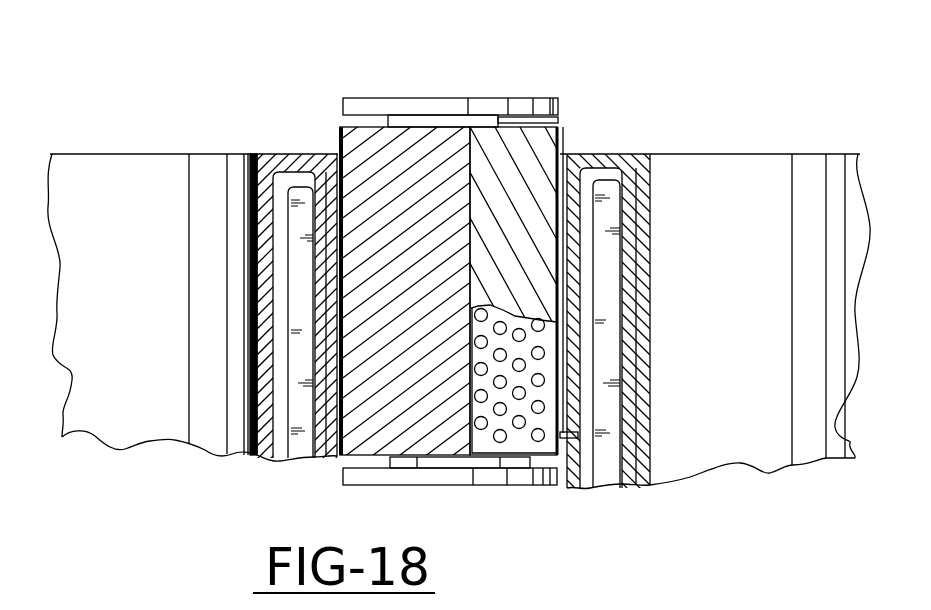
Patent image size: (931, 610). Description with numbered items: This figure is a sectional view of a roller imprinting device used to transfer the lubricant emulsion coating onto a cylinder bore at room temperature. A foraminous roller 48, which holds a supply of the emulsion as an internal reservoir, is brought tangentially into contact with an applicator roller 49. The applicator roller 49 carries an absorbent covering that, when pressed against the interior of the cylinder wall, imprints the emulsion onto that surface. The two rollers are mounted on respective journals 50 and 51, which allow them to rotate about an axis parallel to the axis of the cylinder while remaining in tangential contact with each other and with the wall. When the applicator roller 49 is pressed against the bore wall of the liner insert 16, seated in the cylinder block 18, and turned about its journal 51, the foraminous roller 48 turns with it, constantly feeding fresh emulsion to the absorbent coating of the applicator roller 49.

The liner insert 16 is at (353, 200).
The cylinder block 18 is at (267, 250).
The foraminous roller 48 is at (537, 185).
The applicator roller 49 is at (363, 162).
The journal 50 is at (558, 113).
The journal 51 is at (432, 118).